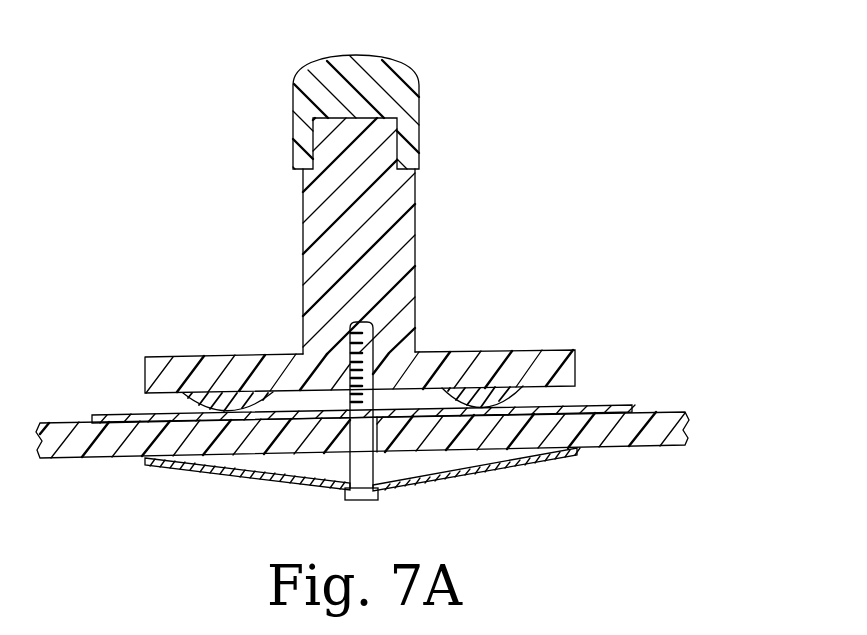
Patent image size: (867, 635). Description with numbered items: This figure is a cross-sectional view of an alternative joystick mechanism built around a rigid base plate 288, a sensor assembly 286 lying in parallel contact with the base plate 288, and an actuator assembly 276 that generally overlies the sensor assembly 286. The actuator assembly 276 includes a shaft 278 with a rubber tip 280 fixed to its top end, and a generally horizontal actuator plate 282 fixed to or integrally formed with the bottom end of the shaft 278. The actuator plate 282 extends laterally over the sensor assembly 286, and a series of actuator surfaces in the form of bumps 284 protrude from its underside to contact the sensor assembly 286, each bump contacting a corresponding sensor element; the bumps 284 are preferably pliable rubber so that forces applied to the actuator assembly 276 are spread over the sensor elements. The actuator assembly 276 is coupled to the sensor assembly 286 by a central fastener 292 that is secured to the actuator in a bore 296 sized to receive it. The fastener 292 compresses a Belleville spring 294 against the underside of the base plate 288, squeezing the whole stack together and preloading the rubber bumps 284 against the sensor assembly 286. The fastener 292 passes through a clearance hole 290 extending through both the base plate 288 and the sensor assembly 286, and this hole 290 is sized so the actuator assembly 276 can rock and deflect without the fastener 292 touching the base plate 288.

The actuator assembly 276 is at (458, 273).
The shaft 278 is at (413, 222).
The rubber tip 280 is at (393, 62).
The actuator plate 282 is at (517, 350).
The bumps 284 is at (507, 406).
The sensor assembly 286 is at (620, 407).
The base plate 288 is at (615, 448).
The clearance hole 290 is at (377, 442).
The central fastener 292 is at (368, 502).
The Belleville spring 294 is at (265, 477).
The bore 296 is at (330, 353).